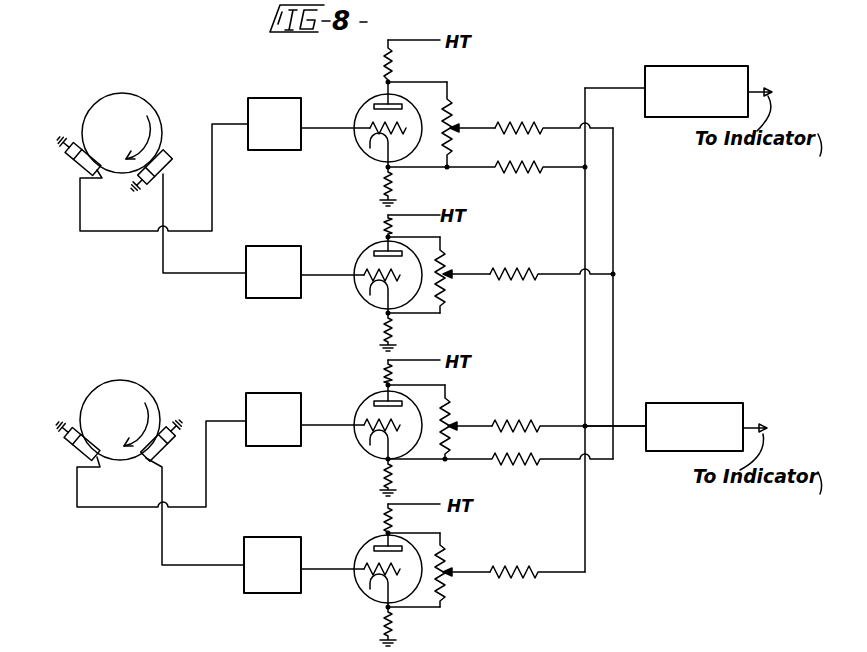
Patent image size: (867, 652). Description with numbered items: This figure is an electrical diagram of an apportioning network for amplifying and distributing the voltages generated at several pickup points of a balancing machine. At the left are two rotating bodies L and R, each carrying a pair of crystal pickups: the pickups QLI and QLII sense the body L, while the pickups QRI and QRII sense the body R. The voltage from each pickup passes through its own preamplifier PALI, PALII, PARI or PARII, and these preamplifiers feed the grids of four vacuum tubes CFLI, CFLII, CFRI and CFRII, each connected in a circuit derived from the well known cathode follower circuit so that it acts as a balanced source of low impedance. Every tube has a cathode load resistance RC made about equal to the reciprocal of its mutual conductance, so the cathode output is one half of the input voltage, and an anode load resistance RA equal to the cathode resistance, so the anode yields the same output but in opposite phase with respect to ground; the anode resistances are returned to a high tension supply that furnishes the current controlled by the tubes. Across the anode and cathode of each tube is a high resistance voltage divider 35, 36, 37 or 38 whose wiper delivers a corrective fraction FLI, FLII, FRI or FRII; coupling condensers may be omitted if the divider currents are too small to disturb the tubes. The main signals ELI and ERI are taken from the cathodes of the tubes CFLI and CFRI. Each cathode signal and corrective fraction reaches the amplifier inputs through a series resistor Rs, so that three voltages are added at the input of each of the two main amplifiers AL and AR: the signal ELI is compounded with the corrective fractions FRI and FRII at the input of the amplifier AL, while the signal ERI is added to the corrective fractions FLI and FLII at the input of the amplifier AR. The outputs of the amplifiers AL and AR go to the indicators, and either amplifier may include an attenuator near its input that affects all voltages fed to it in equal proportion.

The left drum / rotating body L is at (110, 132).
The right drum / rotating body R is at (107, 420).
The crystal pickup QLI is at (71, 166).
The crystal pickup QLII is at (187, 203).
The crystal pickup QRI is at (74, 456).
The crystal pickup QRII is at (145, 463).
The preamplifier PALI is at (309, 124).
The preamplifier PALII is at (305, 272).
The preamplifier PARI is at (305, 419).
The preamplifier PARII is at (304, 565).
The vacuum tube CFLI is at (369, 124).
The vacuum tube CFLII is at (353, 291).
The vacuum tube CFRI is at (350, 431).
The vacuum tube CFRII is at (352, 589).
The high resistance voltage divider 35 is at (451, 100).
The high resistance voltage divider 36 is at (446, 260).
The high resistance voltage divider 37 is at (465, 390).
The high resistance voltage divider 38 is at (449, 560).
The corrective fraction FLI is at (470, 126).
The corrective fraction FLII is at (472, 272).
The corrective fraction FRI is at (470, 418).
The corrective fraction FRII is at (537, 562).
The balanced low impedance source signal ELI is at (510, 182).
The balanced low impedance source signal ERI is at (466, 463).
The anode load resistance RA is at (379, 59).
The cathode load resistance RC is at (381, 189).
The series resistor Rs is at (525, 370).
The main amplifier AL is at (678, 91).
The main amplifier AR is at (676, 427).